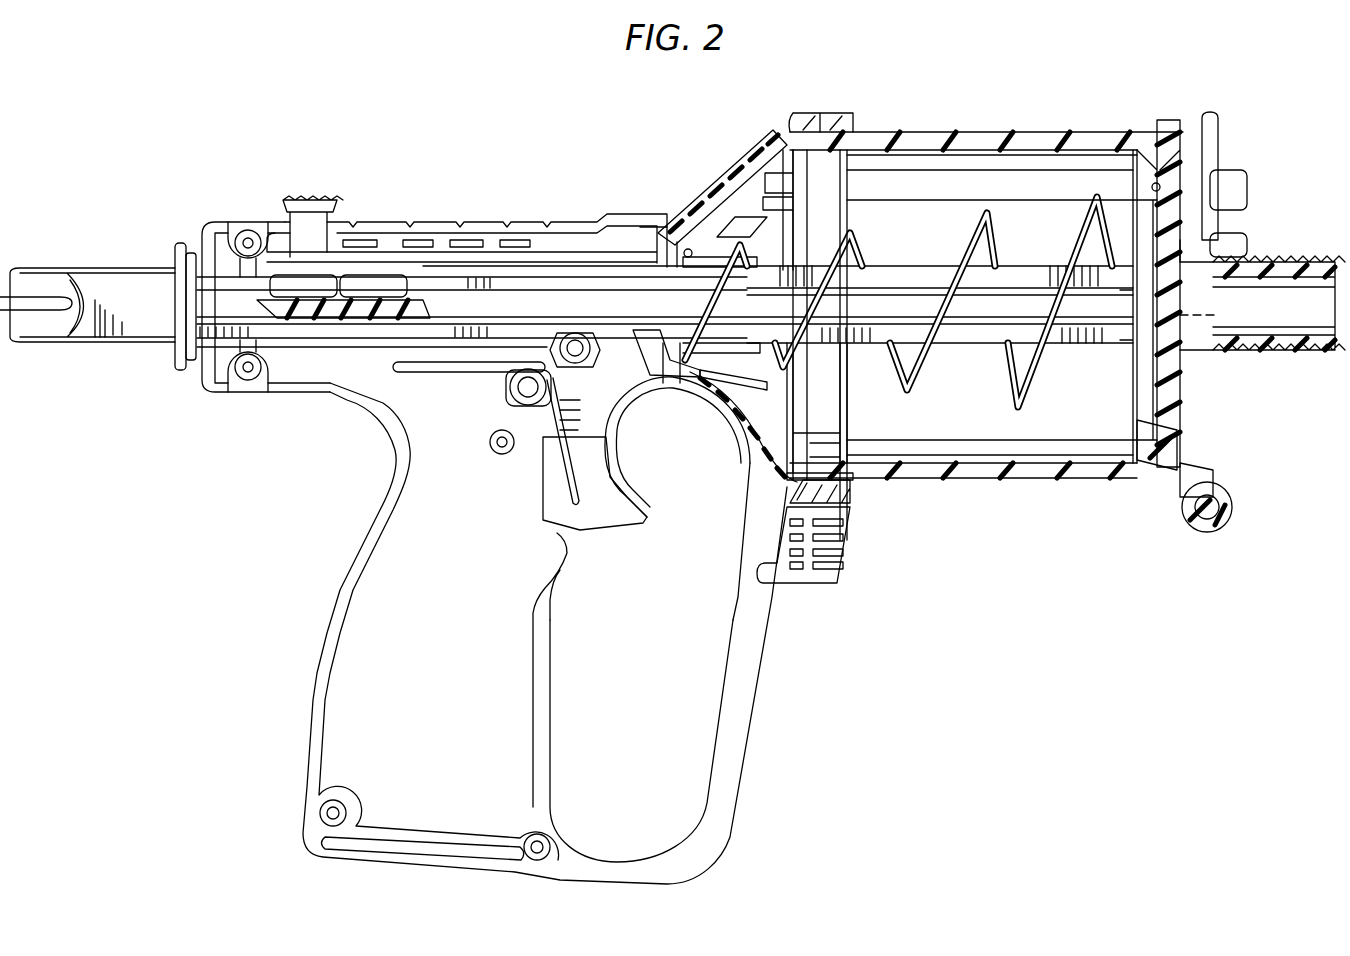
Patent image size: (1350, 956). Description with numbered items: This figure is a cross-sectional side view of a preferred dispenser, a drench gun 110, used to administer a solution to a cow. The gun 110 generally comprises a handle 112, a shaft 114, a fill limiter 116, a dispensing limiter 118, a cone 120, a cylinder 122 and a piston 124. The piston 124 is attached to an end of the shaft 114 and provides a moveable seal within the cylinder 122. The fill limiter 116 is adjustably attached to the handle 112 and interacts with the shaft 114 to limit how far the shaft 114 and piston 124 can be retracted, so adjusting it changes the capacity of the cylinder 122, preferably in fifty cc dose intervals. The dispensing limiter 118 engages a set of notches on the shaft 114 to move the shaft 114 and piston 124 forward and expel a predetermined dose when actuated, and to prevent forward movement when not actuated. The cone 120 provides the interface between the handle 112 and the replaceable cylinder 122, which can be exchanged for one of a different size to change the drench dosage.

The gun 110 is at (893, 640).
The handle 112 is at (320, 677).
The shaft 114 is at (515, 303).
The fill limiter 116 is at (329, 200).
The dispensing limiter 118 is at (620, 520).
The cone 120 is at (743, 180).
The cylinder 122 is at (961, 132).
The piston 124 is at (1165, 425).